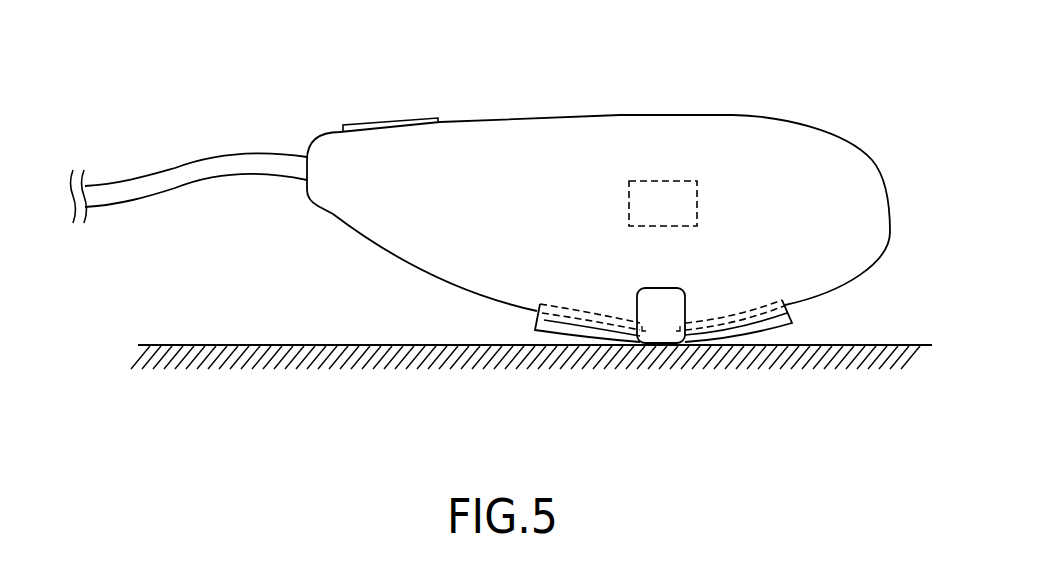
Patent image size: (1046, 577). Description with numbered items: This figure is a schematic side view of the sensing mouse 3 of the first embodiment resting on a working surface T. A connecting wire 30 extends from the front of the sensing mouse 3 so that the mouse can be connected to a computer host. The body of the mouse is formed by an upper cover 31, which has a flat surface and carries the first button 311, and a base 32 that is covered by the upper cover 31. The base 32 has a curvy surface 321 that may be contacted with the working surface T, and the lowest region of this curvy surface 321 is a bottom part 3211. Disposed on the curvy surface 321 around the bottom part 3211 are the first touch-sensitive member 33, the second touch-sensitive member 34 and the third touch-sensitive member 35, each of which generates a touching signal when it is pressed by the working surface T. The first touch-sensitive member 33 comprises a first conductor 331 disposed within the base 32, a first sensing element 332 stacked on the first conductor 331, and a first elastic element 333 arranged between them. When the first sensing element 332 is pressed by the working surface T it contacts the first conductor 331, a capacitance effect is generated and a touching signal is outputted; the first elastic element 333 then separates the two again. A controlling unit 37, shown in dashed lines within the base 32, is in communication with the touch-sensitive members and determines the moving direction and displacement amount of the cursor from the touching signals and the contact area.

The sensing mouse 3 is at (235, 44).
The connecting wire 30 is at (223, 162).
The upper cover 31 is at (733, 115).
The first button 311 is at (392, 122).
The base 32 is at (835, 157).
The curvy surface 321 is at (402, 258).
The bottom part 3211 is at (663, 343).
The first touch-sensitive member 33 is at (597, 420).
The first conductor 331 is at (557, 327).
The first sensing element 332 is at (572, 336).
The first elastic element 333 is at (533, 316).
The second touch-sensitive member 34 is at (663, 303).
The third touch-sensitive member 35 is at (767, 330).
The controlling unit 37 is at (662, 195).
The working surface T is at (243, 345).